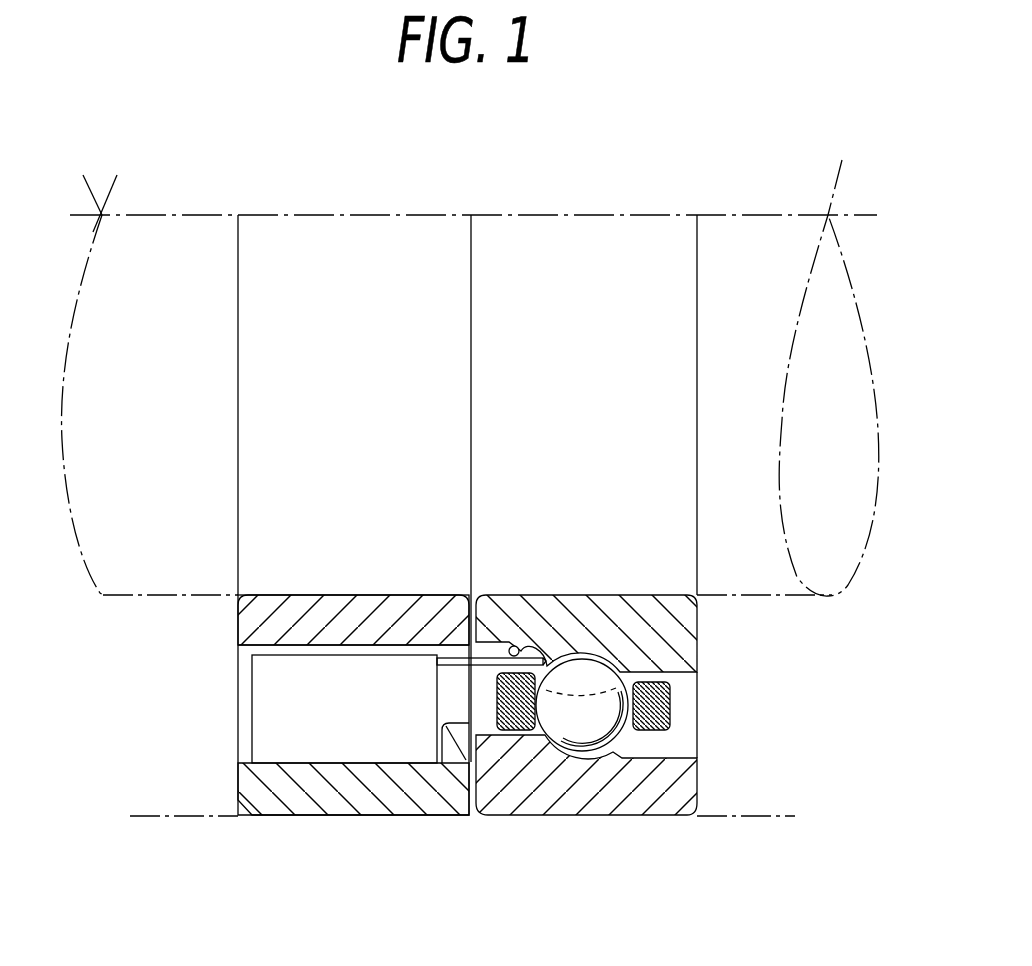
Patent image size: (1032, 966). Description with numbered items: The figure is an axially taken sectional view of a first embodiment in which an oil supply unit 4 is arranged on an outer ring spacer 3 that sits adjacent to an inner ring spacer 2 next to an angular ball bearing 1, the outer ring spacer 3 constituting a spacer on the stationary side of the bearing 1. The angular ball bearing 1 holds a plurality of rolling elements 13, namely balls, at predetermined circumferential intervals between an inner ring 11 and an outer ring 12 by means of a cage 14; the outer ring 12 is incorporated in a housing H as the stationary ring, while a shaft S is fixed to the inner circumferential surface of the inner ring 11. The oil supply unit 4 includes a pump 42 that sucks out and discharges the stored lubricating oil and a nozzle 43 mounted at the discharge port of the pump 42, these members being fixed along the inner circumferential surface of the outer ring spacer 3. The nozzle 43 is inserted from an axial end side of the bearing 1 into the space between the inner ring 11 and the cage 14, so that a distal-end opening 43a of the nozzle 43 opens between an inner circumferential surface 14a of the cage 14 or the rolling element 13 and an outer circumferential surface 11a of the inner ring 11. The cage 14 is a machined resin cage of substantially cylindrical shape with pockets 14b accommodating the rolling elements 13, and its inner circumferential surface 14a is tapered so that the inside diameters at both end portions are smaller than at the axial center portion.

The angular ball bearing 1 is at (594, 730).
The inner ring spacer 2 is at (343, 617).
The outer ring spacer 3 is at (335, 798).
The oil supply unit 4 is at (391, 729).
The inner ring 11 is at (618, 593).
The outer circumferential surface of the inner ring 11a is at (510, 647).
The outer ring 12 is at (595, 814).
The rolling element 13 is at (577, 723).
The cage 14 is at (594, 808).
The inner circumferential surface of the cage 14a is at (503, 730).
The pocket 14b is at (620, 733).
The pump 42 is at (302, 745).
The nozzle 43 is at (467, 657).
The distal-end opening of the nozzle 43a is at (553, 663).
The shaft S is at (828, 565).
The housing H is at (775, 808).